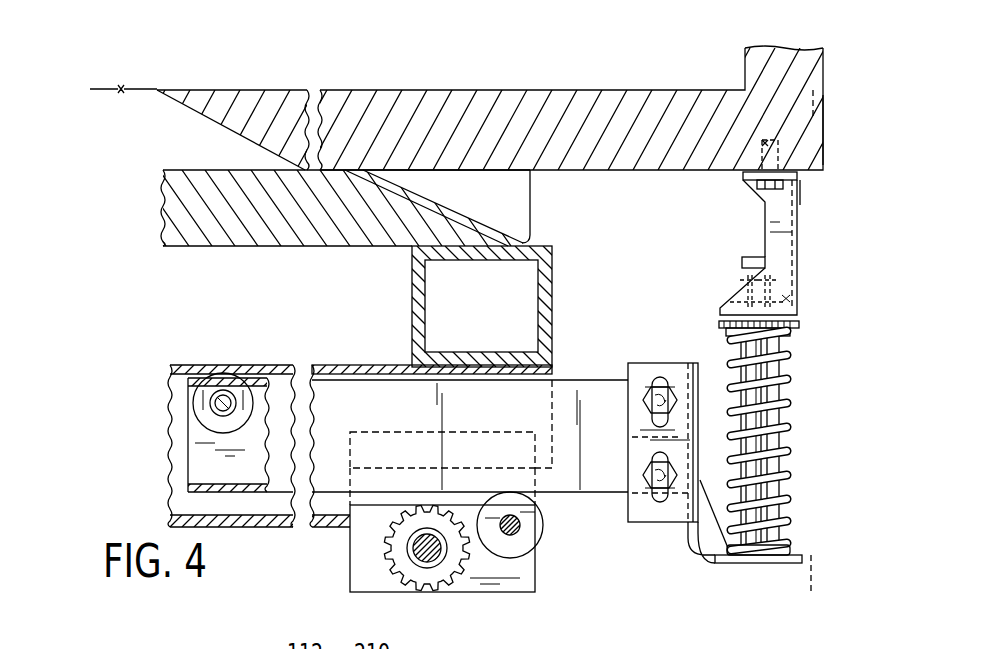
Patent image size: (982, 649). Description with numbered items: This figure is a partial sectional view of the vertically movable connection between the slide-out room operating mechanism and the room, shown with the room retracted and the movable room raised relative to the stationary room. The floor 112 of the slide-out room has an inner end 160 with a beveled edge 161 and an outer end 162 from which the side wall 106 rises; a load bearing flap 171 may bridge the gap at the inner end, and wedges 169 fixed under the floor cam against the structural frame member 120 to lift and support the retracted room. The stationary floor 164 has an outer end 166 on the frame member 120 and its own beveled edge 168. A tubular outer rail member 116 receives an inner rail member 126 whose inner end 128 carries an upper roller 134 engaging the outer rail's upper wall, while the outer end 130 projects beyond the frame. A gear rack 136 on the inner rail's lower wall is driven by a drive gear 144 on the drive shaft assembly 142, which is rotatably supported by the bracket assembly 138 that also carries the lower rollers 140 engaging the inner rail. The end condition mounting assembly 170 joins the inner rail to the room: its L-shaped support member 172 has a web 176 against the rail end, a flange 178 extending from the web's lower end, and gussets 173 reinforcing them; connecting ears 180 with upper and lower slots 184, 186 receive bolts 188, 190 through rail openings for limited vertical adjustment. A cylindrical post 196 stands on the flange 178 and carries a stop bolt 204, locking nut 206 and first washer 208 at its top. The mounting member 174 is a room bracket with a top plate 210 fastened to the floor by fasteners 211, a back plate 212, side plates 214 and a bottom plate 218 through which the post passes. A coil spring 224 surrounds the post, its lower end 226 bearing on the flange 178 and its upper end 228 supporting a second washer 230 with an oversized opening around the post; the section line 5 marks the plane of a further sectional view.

The section line 5- 5 is at (816, 78).
The slide-out room section side wall 106 is at (825, 124).
The floor 112 is at (475, 78).
The tubular outer rail member 116 is at (352, 365).
The structural frame member 120 is at (552, 307).
The inner rail member 126 is at (337, 397).
The inner end 128 is at (227, 483).
The outer end 130 is at (612, 480).
The upper roller 134 is at (222, 380).
The gear rack 136 is at (458, 492).
The bracket assembly 138 is at (479, 598).
The lower roller 140 is at (528, 549).
The drive shaft assembly 142 is at (413, 555).
The drive gear 144 is at (422, 589).
The inner end 160 is at (228, 88).
The beveled edge 161 is at (193, 112).
The outer end 162 is at (787, 55).
The stationary floor 164 is at (161, 166).
The outer end 166 is at (438, 223).
The beveled edge 168 is at (387, 186).
The wedge 169 is at (530, 200).
The end condition mounting assembly 170 is at (820, 382).
The load bearing flap 171 is at (138, 88).
The support member 172 is at (669, 549).
The gusset 173 is at (717, 553).
The mounting member 174 is at (814, 246).
The web 176 is at (700, 400).
The flange 178 is at (745, 563).
The connecting ear 180 is at (640, 418).
The upper slot 184 is at (660, 379).
The lower slot 186 is at (650, 461).
The bolt 188 is at (640, 380).
The bolt 190 is at (640, 488).
The cylindrical post 196 is at (771, 477).
The stop bolt 204 is at (762, 257).
The locking nut 206 is at (737, 292).
The first washer 208 is at (797, 289).
The top plate 210 is at (750, 177).
The fastener 211 is at (763, 141).
The back plate 212 is at (797, 216).
The side plate 214 is at (780, 248).
The bottom plate 218 is at (717, 300).
The coil spring 224 is at (790, 443).
The lower end 226 is at (790, 551).
The upper end 228 is at (792, 329).
The second washer 230 is at (801, 325).